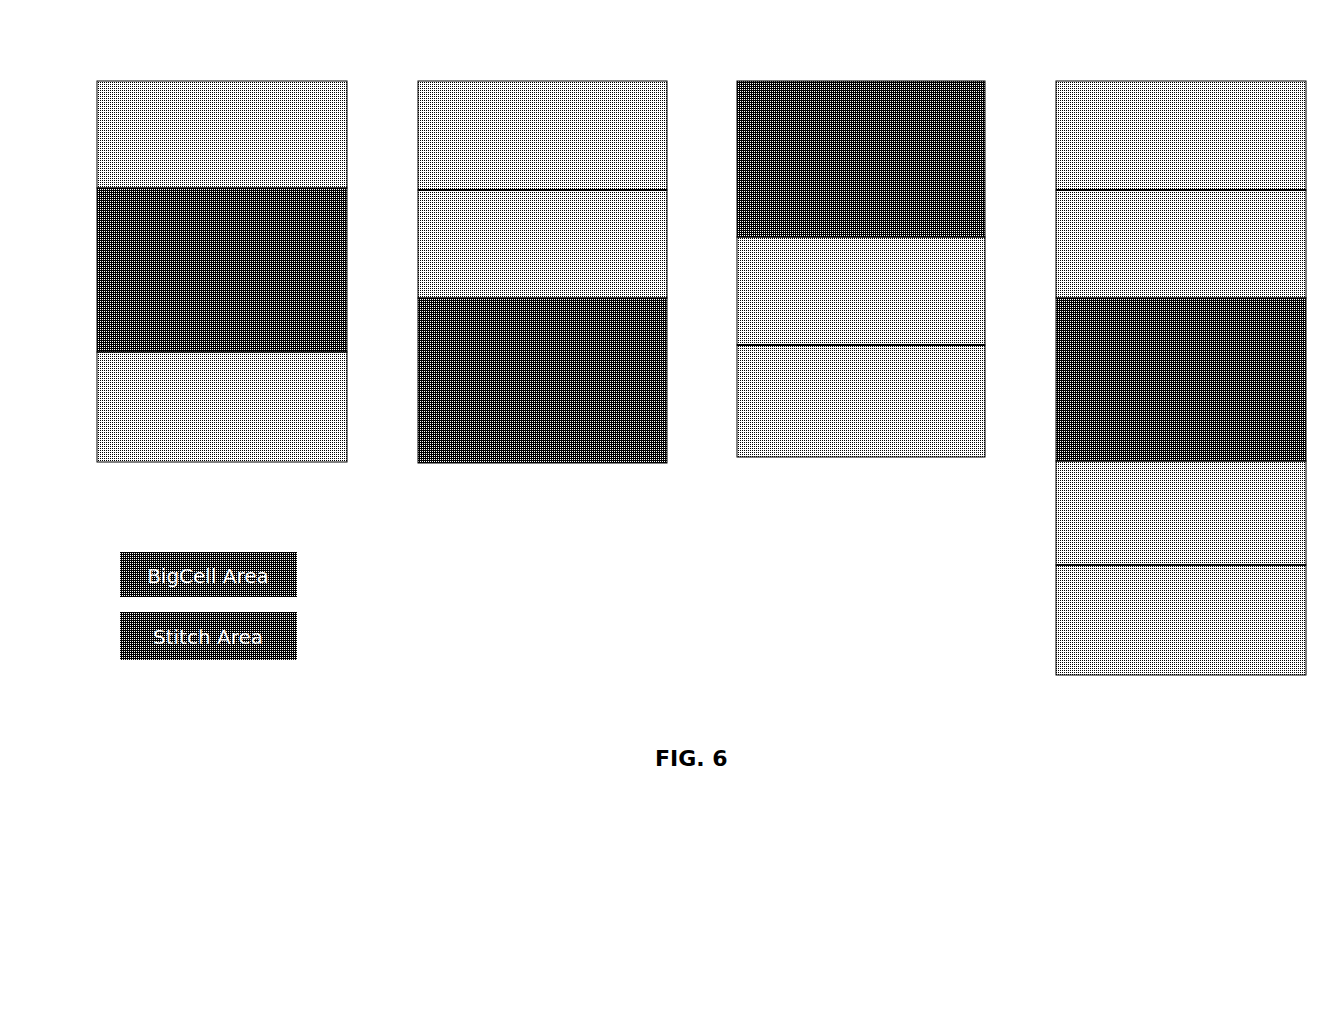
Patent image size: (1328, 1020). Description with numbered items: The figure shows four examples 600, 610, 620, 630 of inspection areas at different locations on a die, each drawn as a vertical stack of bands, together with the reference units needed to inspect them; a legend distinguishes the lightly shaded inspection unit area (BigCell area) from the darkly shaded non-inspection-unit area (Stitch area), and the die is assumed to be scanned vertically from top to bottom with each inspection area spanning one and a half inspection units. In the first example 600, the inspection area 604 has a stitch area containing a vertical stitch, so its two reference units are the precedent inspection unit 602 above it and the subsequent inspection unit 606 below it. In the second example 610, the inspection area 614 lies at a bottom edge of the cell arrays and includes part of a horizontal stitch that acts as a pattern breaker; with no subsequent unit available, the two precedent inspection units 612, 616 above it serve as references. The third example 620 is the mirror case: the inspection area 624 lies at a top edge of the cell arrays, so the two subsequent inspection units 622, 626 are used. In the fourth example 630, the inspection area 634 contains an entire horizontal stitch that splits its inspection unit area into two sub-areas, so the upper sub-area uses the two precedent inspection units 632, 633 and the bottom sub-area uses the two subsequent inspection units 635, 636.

The first example 600 is at (226, 239).
The precedent inspection unit 602 is at (222, 134).
The inspection area 604 is at (222, 270).
The subsequent inspection unit 606 is at (222, 407).
The second example 610 is at (542, 240).
The precedent inspection unit 612 is at (542, 135).
The inspection area 614 is at (542, 380).
The precedent inspection unit 616 is at (542, 244).
The third example 620 is at (861, 237).
The subsequent inspection unit 622 is at (861, 291).
The inspection area 624 is at (861, 159).
The subsequent inspection unit 626 is at (861, 401).
The fourth example 630 is at (1181, 346).
The precedent inspection unit 632 is at (1181, 135).
The precedent inspection unit 633 is at (1181, 244).
The inspection area 634 is at (1181, 379).
The subsequent inspection unit 635 is at (1181, 513).
The subsequent inspection unit 636 is at (1181, 620).